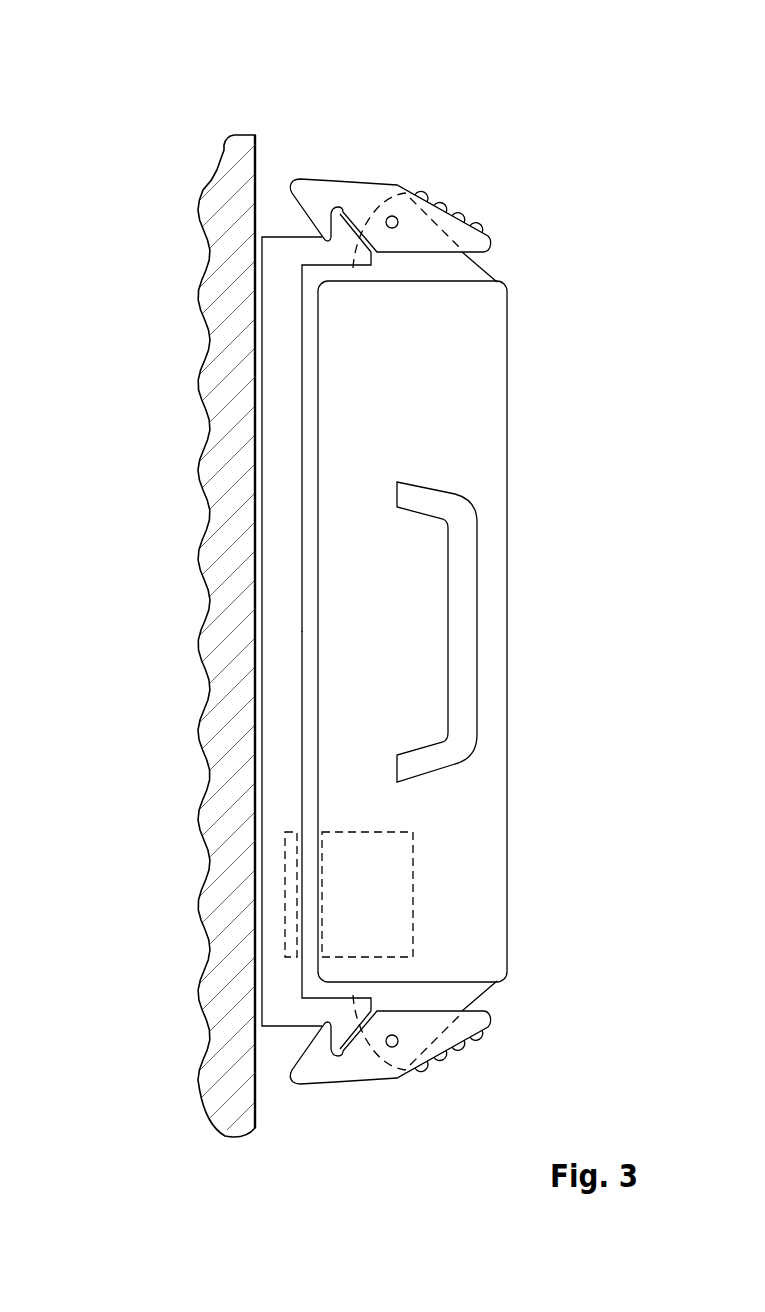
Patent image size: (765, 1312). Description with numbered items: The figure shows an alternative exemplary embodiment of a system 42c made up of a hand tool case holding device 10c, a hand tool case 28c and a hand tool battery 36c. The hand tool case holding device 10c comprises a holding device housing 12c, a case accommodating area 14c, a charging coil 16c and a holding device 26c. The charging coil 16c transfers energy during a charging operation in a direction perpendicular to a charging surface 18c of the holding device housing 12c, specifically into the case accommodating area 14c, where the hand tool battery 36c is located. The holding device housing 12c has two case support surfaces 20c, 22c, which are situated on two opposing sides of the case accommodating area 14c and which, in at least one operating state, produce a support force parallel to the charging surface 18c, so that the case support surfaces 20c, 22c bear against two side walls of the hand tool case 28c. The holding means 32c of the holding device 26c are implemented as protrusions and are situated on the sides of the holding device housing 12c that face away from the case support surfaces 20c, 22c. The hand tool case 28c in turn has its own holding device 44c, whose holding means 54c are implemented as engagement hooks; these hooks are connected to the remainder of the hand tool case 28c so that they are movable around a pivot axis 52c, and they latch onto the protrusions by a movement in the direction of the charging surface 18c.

The hand tool case holding device 10c is at (377, 588).
The holding device housing 12c is at (280, 320).
The case accommodating area 14c is at (446, 588).
The charging coil 16c is at (285, 900).
The charging surface 18c is at (396, 894).
The case support surface 20c is at (306, 996).
The case support surface 22c is at (307, 267).
The holding device 26c is at (458, 196).
The hand tool case 28c is at (497, 307).
The holding means 32c is at (350, 280).
The hand tool battery 36c is at (395, 905).
The system 42c is at (492, 108).
The holding device 44c is at (505, 1054).
The pivot axis 52c is at (396, 217).
The holding means 54c is at (300, 181).